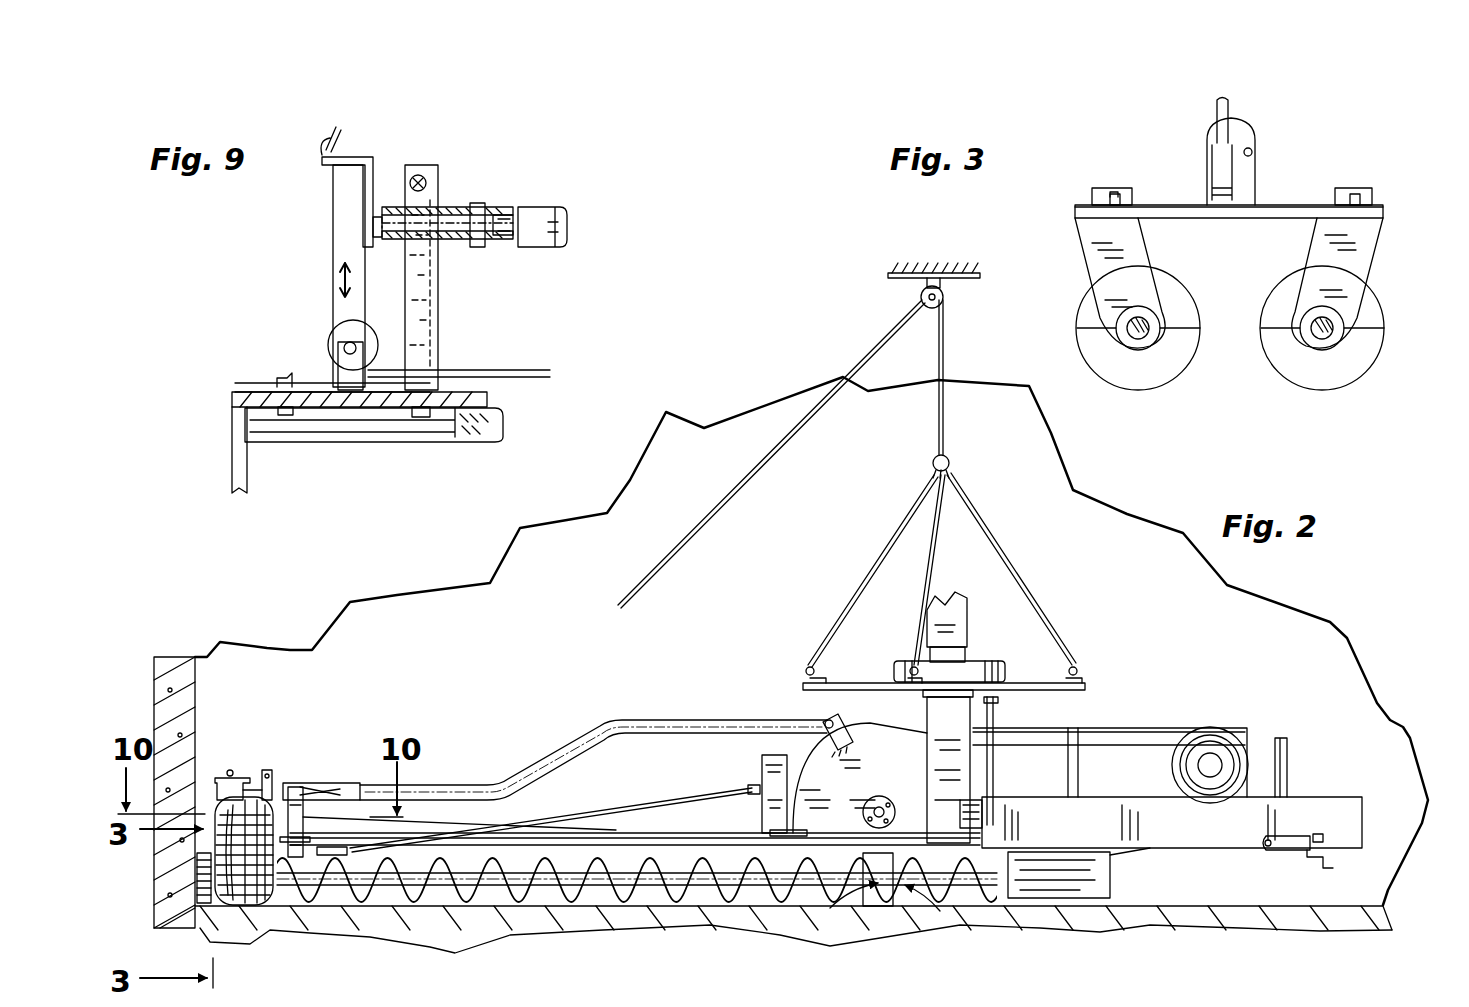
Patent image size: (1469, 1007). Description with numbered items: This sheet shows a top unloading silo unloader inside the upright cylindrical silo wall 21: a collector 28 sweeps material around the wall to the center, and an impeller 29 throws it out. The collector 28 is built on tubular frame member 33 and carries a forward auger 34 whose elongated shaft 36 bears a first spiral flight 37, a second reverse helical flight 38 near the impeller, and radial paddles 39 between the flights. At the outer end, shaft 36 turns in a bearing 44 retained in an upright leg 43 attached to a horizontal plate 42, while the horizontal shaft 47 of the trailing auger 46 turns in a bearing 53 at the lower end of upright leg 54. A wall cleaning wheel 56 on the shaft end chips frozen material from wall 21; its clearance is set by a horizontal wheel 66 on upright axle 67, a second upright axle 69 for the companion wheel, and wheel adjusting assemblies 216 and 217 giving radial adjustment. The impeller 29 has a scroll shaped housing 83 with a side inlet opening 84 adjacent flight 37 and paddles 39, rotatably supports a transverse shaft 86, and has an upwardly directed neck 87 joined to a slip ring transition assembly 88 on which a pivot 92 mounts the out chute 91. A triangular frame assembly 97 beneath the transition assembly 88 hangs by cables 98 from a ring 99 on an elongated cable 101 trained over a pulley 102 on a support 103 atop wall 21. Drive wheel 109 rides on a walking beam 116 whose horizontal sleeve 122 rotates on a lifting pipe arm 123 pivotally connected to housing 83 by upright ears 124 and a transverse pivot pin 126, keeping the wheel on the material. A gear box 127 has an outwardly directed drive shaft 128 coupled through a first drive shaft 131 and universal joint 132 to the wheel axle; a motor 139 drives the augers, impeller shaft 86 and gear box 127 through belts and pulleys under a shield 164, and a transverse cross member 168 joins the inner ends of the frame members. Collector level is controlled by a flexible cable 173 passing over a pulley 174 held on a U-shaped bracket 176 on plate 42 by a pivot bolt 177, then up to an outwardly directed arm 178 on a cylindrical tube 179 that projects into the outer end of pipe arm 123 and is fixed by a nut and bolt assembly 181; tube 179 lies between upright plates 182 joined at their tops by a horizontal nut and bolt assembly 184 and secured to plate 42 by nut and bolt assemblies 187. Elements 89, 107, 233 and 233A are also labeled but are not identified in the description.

In FIG. 2, the upright cylindrical wall 21 is at (154, 712).
In FIG. 2, the collector 28 is at (425, 765).
In FIG. 2, the impeller 29 is at (790, 694).
In FIG. 2, the frame member 33 is at (618, 837).
In FIG. 3, the forward auger 34 is at (1375, 273).
In FIG. 3, the shaft 36 is at (1322, 345).
In FIG. 2, the shaft 36 is at (398, 905).
In FIG. 3, the first spiral flight 37 is at (1375, 342).
In FIG. 2, the first spiral flight 37 is at (598, 927).
In FIG. 2, the second reverse helical flight 38 is at (967, 920).
In FIG. 2, the radial paddles 39 is at (882, 895).
In FIG. 9, the horizontal plate 42 is at (440, 402).
In FIG. 3, the horizontal plate 42 is at (1295, 210).
In FIG. 3, the upright leg 43 is at (1363, 252).
In FIG. 3, the bearing 44 is at (1340, 325).
In FIG. 3, the trailing auger 46 is at (1058, 283).
In FIG. 3, the horizontal shaft 47 is at (1150, 335).
In FIG. 3, the bearing 53 is at (1135, 340).
In FIG. 9, the upright leg 54 is at (247, 462).
In FIG. 3, the upright leg 54 is at (1092, 254).
In FIG. 2, the wall cleaning wheel 56 is at (197, 873).
In FIG. 2, the horizontal wheel 66 is at (203, 805).
In FIG. 3, the upright axle 67 is at (1365, 190).
In FIG. 9, the second upright axle 69 is at (283, 375).
In FIG. 3, the second upright axle 69 is at (1114, 192).
In FIG. 2, the impeller housing 83 is at (872, 732).
In FIG. 2, the side inlet opening 84 is at (837, 850).
In FIG. 2, the transverse shaft 86 is at (888, 805).
In FIG. 2, the outlet or neck 87 is at (935, 712).
In FIG. 2, the transition assembly 88 is at (985, 672).
In FIG. 2, the base 89 is at (970, 655).
In FIG. 2, the out chute 91 is at (962, 615).
In FIG. 2, the pivot 92 is at (967, 632).
In FIG. 2, the triangular frame assembly 97 is at (873, 615).
In FIG. 2, the cable 98 is at (897, 533).
In FIG. 2, the ring 99 is at (950, 463).
In FIG. 2, the elongated cable 101 is at (943, 348).
In FIG. 2, the pulley 102 is at (928, 305).
In FIG. 2, the support 103 is at (945, 270).
In FIG. 2, the gearbox 107 is at (1276, 850).
In FIG. 2, the drive wheel 109 is at (262, 775).
In FIG. 2, the walking beam 116 is at (298, 786).
In FIG. 9, the horizontal sleeve 122 is at (550, 218).
In FIG. 2, the horizontal sleeve 122 is at (338, 781).
In FIG. 9, the lifting pipe arm 123 is at (508, 212).
In FIG. 2, the lifting pipe arm 123 is at (574, 742).
In FIG. 2, the upright ears 124 is at (855, 740).
In FIG. 2, the transverse pivot pin 126 is at (820, 722).
In FIG. 2, the gear box 127 is at (770, 760).
In FIG. 2, the drive shaft 128 is at (757, 795).
In FIG. 2, the first drive shaft 131 is at (560, 815).
In FIG. 2, the universal joint 132 is at (747, 788).
In FIG. 2, the motor 139 is at (1212, 730).
In FIG. 2, the shield 164 is at (1080, 730).
In FIG. 2, the transverse cross member 168 is at (1333, 868).
In FIG. 9, the cable 173 is at (333, 237).
In FIG. 3, the cable 173 is at (1228, 104).
In FIG. 2, the cable 173 is at (221, 770).
In FIG. 9, the pulley 174 is at (343, 327).
In FIG. 9, the U-shaped bracket 176 is at (340, 377).
In FIG. 3, the U-shaped bracket 176 is at (1255, 172).
In FIG. 3, the pivot bolt 177 is at (1250, 151).
In FIG. 9, the outwardly directed arm 178 is at (367, 165).
In FIG. 2, the outwardly directed arm 178 is at (235, 778).
In FIG. 9, the cylindrical member or tube 179 is at (437, 223).
In FIG. 9, the nut and bolt assembly 181 is at (480, 200).
In FIG. 9, the upright plate 182 is at (432, 315).
In FIG. 9, the horizontal nut and bolt assembly 184 is at (418, 180).
In FIG. 9, the nut and bolt assembly 187 is at (423, 413).
In FIG. 3, the wheel adjusting assembly 216 is at (1380, 207).
In FIG. 9, the wheel adjusting assembly 217 is at (263, 385).
In FIG. 3, the wheel adjusting assembly 217 is at (1080, 205).
In FIG. 3, the block 233 is at (1345, 188).
In FIG. 3, the block 233A is at (1128, 188).